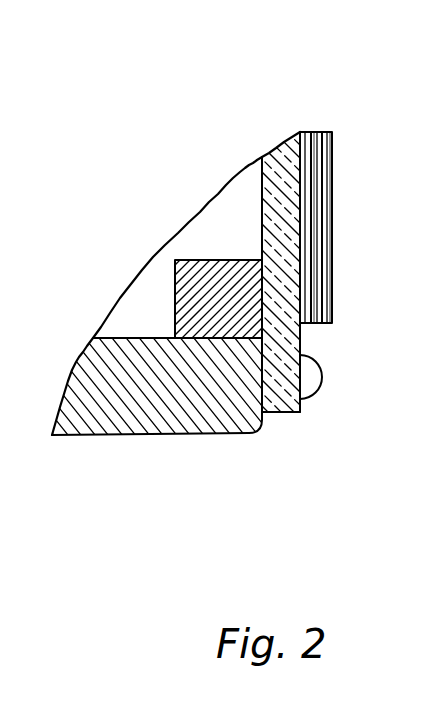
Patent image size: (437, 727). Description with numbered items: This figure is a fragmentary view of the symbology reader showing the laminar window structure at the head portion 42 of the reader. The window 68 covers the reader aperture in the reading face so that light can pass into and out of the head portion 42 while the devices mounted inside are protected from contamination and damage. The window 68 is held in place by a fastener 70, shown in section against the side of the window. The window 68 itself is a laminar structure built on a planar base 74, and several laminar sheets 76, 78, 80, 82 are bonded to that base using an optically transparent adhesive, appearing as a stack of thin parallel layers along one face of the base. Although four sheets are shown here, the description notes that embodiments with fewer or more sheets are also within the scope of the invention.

The head portion 42 is at (220, 435).
The window 68 is at (360, 137).
The fastener 70 is at (322, 385).
The planar base 74 is at (257, 158).
The laminar sheet 76 is at (266, 150).
The laminar sheet 78 is at (312, 132).
The laminar sheet 80 is at (322, 283).
The laminar sheet 82 is at (327, 308).